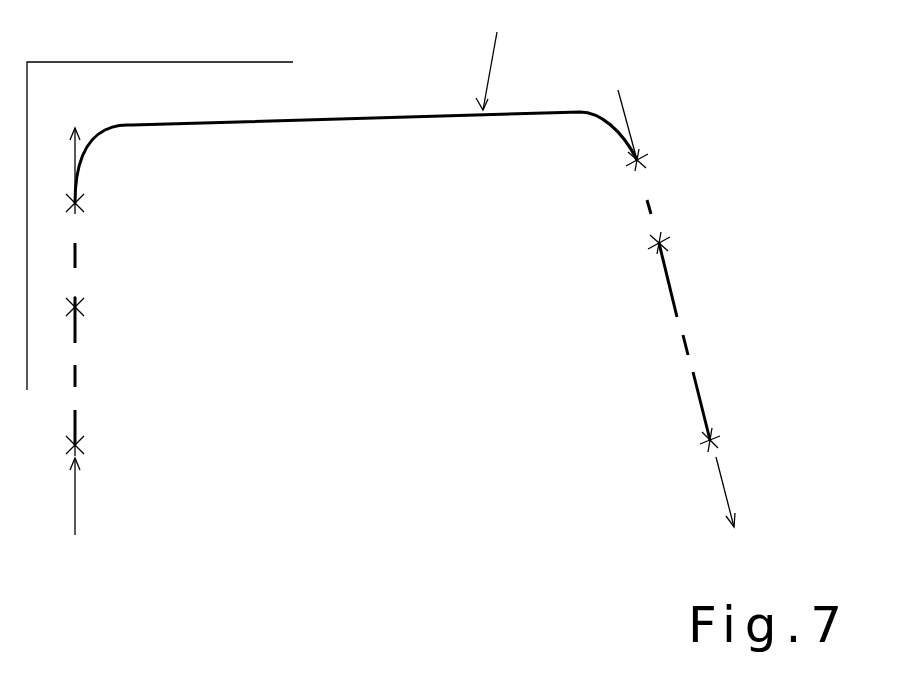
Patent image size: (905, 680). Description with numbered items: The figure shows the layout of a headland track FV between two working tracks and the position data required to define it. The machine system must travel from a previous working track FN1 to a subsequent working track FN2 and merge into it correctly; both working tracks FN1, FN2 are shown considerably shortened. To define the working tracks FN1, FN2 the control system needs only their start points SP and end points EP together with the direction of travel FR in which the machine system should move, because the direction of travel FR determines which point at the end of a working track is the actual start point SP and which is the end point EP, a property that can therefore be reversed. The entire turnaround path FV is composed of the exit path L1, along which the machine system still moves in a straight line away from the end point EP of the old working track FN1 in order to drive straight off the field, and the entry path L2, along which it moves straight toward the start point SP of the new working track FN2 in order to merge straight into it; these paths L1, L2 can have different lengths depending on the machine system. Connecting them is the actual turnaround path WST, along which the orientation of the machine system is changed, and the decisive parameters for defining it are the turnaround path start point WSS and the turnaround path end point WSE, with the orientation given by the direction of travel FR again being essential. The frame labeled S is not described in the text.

The path / coordinate frame S is at (67, 106).
The turnaround path WST is at (356, 117).
The turnaround path start point WSS is at (80, 203).
The turnaround path end point WSE is at (645, 158).
The headland track FV is at (492, 55).
The exit path L1 is at (75, 230).
The entry path L2 is at (645, 206).
The end point EP is at (80, 307).
The start point SP is at (80, 445).
The previous working track FN1 is at (75, 335).
The subsequent working track FN2 is at (677, 317).
The direction of travel FR is at (75, 495).